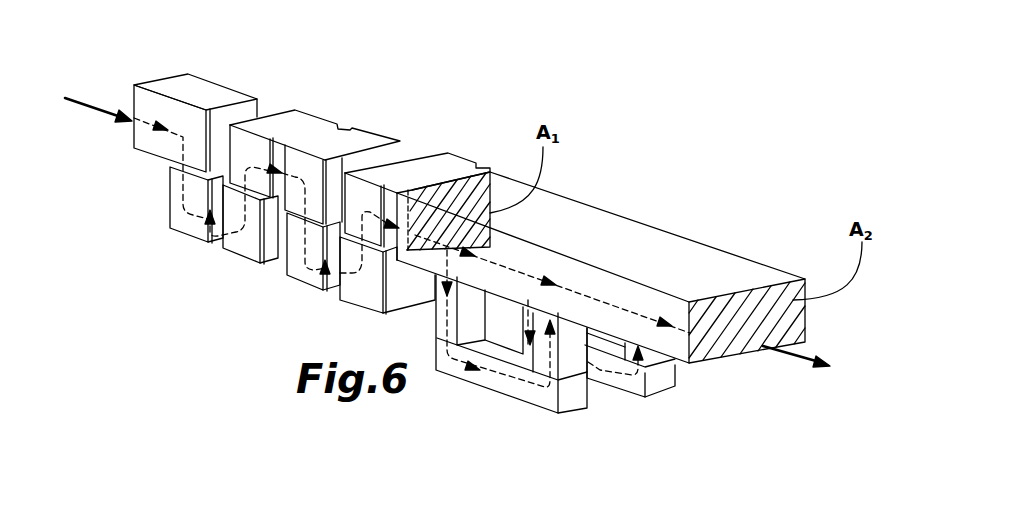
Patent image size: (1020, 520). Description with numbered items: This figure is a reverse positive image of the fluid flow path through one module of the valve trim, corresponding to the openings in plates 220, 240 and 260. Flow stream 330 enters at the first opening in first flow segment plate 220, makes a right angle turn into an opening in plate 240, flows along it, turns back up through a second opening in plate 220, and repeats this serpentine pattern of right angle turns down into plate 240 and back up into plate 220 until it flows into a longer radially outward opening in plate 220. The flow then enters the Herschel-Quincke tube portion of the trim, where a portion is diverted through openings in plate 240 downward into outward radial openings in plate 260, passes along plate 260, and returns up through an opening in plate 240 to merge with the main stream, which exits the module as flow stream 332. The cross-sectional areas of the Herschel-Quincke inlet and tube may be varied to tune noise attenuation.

The first flow segment plate 220 is at (183, 138).
The plate 240 is at (197, 213).
The plate 260 is at (492, 376).
The flow stream 330 is at (115, 111).
The flow stream 332 is at (797, 347).